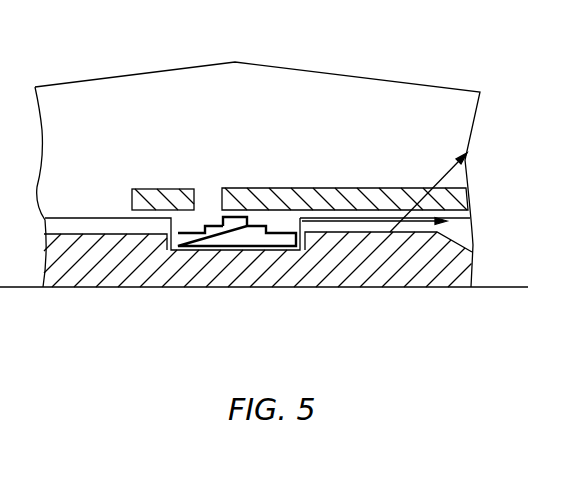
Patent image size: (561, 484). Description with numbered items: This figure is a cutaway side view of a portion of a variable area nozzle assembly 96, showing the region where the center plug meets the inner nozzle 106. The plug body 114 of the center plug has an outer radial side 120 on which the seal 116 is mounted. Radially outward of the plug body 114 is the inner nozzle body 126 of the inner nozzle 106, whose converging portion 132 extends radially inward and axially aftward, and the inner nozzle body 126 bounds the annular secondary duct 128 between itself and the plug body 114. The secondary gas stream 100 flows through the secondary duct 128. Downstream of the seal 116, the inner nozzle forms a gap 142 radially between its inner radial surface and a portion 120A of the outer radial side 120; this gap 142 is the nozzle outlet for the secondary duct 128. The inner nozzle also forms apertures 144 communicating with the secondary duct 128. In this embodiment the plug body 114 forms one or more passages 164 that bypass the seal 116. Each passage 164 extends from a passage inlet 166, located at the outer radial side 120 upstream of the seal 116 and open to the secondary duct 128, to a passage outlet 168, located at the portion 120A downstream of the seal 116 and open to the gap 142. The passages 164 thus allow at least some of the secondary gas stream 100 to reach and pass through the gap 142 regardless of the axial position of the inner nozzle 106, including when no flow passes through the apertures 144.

The variable area nozzle assembly 96 is at (408, 103).
The secondary duct 128 is at (157, 129).
The apertures 144 is at (212, 185).
The seal 116 is at (236, 224).
The converging portion 132 is at (333, 200).
The inner nozzle body 126 is at (373, 185).
The inner nozzle 106 is at (467, 153).
The portion of the outer radial side 120A is at (465, 188).
The gap 142 is at (452, 223).
The outer radial side 120 is at (95, 233).
The passage inlet 166 is at (166, 236).
The passage outlet 168 is at (310, 237).
The passages 164 is at (240, 263).
The plug body 114 is at (428, 264).
The secondary gas stream 100 is at (362, 220).